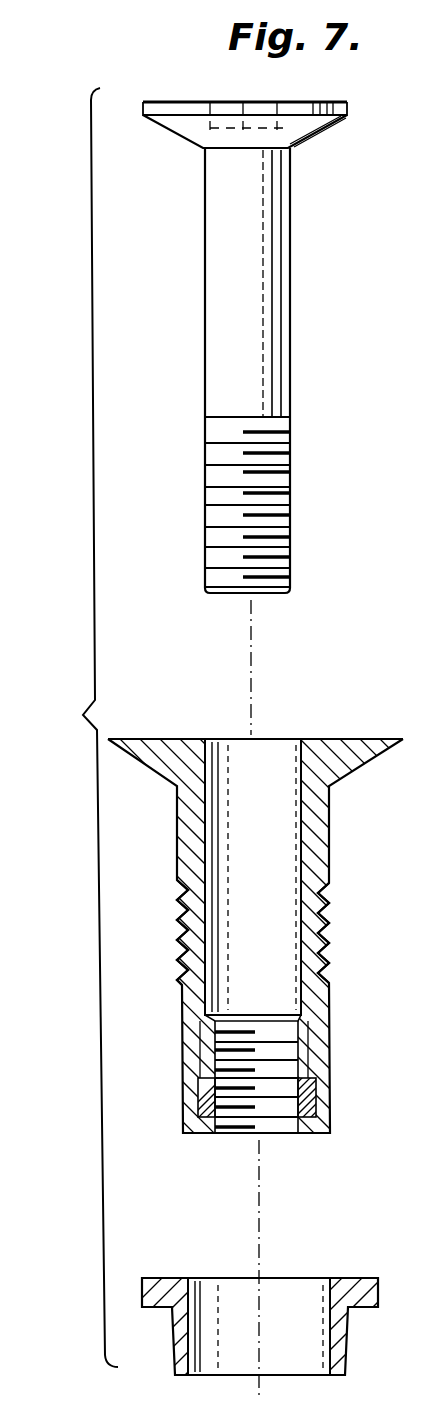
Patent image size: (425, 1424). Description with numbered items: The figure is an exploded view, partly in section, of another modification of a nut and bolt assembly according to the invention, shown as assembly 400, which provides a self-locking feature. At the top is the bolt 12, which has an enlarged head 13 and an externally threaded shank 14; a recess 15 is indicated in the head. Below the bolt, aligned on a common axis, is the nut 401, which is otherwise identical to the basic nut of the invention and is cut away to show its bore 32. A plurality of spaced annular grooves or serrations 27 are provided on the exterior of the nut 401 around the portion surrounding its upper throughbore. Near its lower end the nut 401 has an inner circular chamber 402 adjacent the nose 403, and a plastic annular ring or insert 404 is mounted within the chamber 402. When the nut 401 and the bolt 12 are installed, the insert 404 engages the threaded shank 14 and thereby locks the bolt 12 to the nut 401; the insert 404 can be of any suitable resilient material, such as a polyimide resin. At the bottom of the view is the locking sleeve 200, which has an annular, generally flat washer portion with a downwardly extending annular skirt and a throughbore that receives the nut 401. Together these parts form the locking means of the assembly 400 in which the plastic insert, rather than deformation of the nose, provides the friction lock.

The bolt 12 is at (256, 326).
The enlarged head 13 is at (174, 134).
The externally threaded shank 14 is at (232, 493).
The socket recess 15 is at (212, 124).
The annular grooves or serrations 27 is at (322, 930).
The bore 32 is at (268, 816).
The locking sleeve 200 is at (330, 1271).
The assembly 400 is at (212, 730).
The nut 401 is at (212, 905).
The inner circular chamber 402 is at (315, 1095).
The nose 403 is at (200, 1134).
The plastic annular ring or insert 404 is at (198, 1093).